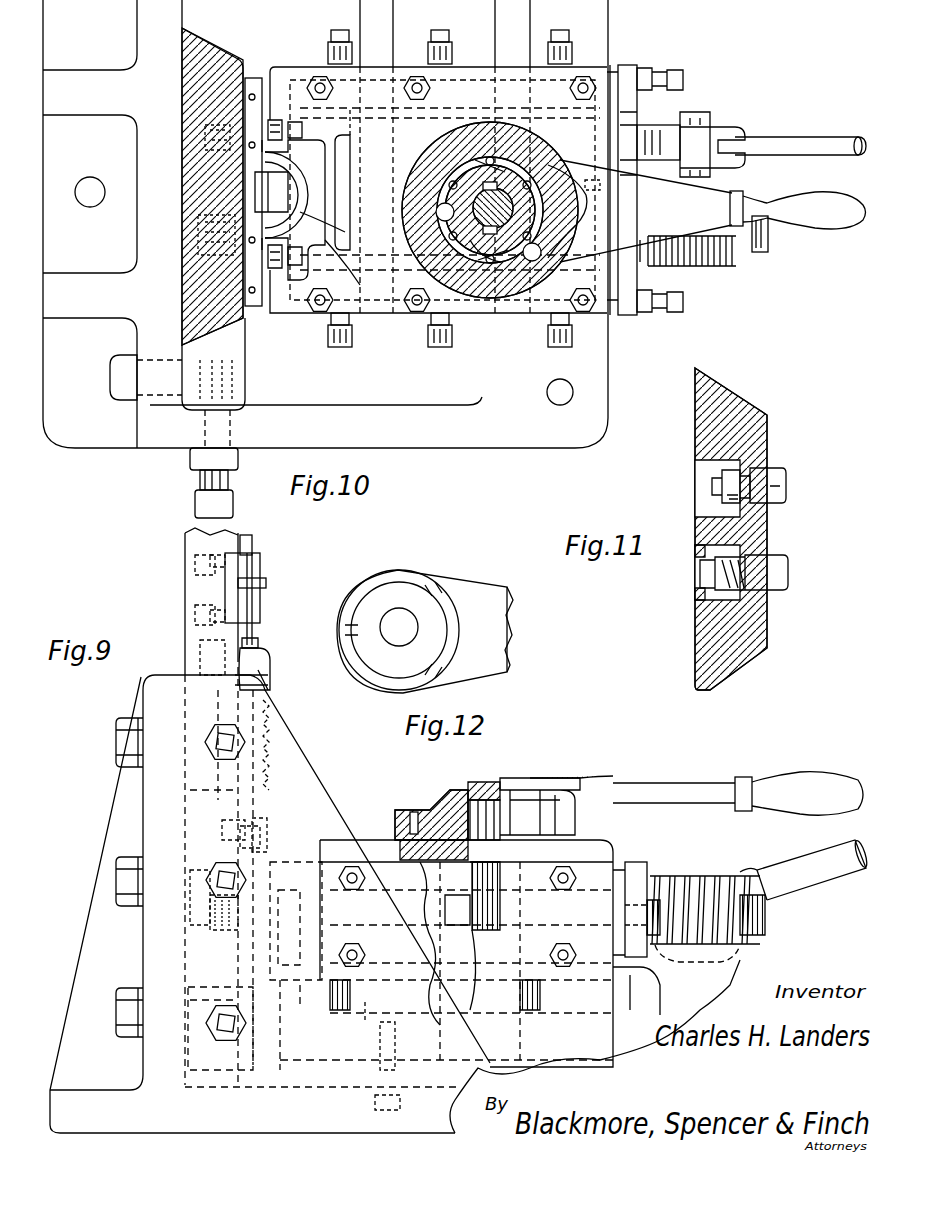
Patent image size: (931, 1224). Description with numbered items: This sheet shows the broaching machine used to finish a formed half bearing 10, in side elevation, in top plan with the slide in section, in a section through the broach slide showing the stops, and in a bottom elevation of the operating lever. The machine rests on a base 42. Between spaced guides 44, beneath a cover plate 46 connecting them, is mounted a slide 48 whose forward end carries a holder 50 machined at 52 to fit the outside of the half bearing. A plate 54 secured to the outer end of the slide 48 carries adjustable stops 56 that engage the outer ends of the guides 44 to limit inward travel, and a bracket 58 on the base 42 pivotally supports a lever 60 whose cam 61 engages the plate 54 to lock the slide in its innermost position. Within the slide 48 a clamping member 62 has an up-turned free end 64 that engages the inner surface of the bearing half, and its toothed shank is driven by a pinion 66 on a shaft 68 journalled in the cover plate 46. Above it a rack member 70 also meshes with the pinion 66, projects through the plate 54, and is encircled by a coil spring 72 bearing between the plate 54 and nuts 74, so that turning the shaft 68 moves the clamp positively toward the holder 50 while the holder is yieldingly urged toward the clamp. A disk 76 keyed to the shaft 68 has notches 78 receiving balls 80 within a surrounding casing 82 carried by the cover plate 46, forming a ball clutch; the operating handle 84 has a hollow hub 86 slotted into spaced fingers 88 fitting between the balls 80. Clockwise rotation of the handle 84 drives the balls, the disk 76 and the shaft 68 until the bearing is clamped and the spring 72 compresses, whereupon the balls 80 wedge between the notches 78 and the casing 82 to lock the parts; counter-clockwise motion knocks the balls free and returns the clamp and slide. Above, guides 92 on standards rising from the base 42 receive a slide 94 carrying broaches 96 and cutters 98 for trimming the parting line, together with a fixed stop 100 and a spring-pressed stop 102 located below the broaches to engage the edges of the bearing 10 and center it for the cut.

In FIG. 10, the bearing 10 is at (345, 232).
In FIG. 9, the base 42 is at (268, 1118).
In FIG. 10, the guides 44 is at (295, 75).
In FIG. 10, the cover plate 46 is at (402, 73).
In FIG. 9, the cover plate 46 is at (382, 835).
In FIG. 10, the slide 48 is at (362, 287).
In FIG. 9, the slide 48 is at (420, 865).
In FIG. 10, the holder 50 is at (302, 282).
In FIG. 10, the machined seat surface 52 is at (283, 118).
In FIG. 10, the plate 54 is at (632, 308).
In FIG. 9, the plate 54 is at (635, 870).
In FIG. 10, the adjustable stops 56 is at (680, 72).
In FIG. 9, the adjustable stops 56 is at (660, 895).
In FIG. 10, the bracket 58 is at (712, 118).
In FIG. 9, the bracket 58 is at (658, 1015).
In FIG. 10, the lever 60 is at (795, 142).
In FIG. 9, the lever 60 is at (798, 870).
In FIG. 10, the cam 61 is at (672, 130).
In FIG. 9, the cam 61 is at (725, 950).
In FIG. 10, the clamping member 62 is at (380, 165).
In FIG. 9, the clamping member 62 is at (358, 1010).
In FIG. 10, the up-turned free end 64 is at (268, 193).
In FIG. 9, the pinion 66 is at (500, 945).
In FIG. 10, the shaft 68 is at (498, 240).
In FIG. 9, the shaft 68 is at (500, 784).
In FIG. 10, the rack member 70 is at (600, 215).
In FIG. 9, the rack member 70 is at (448, 915).
In FIG. 10, the coil spring 72 is at (715, 266).
In FIG. 9, the coil spring 72 is at (705, 885).
In FIG. 10, the nuts 74 is at (770, 240).
In FIG. 9, the nuts 74 is at (755, 935).
In FIG. 10, the disk 76 is at (480, 230).
In FIG. 10, the notches 78 is at (455, 268).
In FIG. 10, the balls 80 is at (436, 210).
In FIG. 9, the balls 80 is at (440, 800).
In FIG. 10, the casing 82 is at (440, 165).
In FIG. 10, the operating handle 84 is at (825, 208).
In FIG. 12, the operating handle 84 is at (485, 590).
In FIG. 9, the operating handle 84 is at (805, 792).
In FIG. 10, the hollow hub 86 is at (505, 162).
In FIG. 9, the hollow hub 86 is at (482, 785).
In FIG. 10, the fingers 88 is at (480, 158).
In FIG. 12, the fingers 88 is at (397, 582).
In FIG. 10, the guides 92 is at (240, 372).
In FIG. 9, the guides 92 is at (200, 1020).
In FIG. 10, the slide 94 is at (190, 320).
In FIG. 11, the slide 94 is at (752, 412).
In FIG. 9, the slide 94 is at (196, 590).
In FIG. 10, the broaches 96 is at (250, 114).
In FIG. 9, the broaches 96 is at (262, 655).
In FIG. 9, the cutters 98 is at (265, 578).
In FIG. 10, the fixed stop 100 is at (205, 152).
In FIG. 11, the fixed stop 100 is at (788, 486).
In FIG. 9, the fixed stop 100 is at (270, 825).
In FIG. 10, the spring-pressed stop 102 is at (198, 245).
In FIG. 11, the spring-pressed stop 102 is at (788, 585).
In FIG. 9, the spring-pressed stop 102 is at (242, 928).